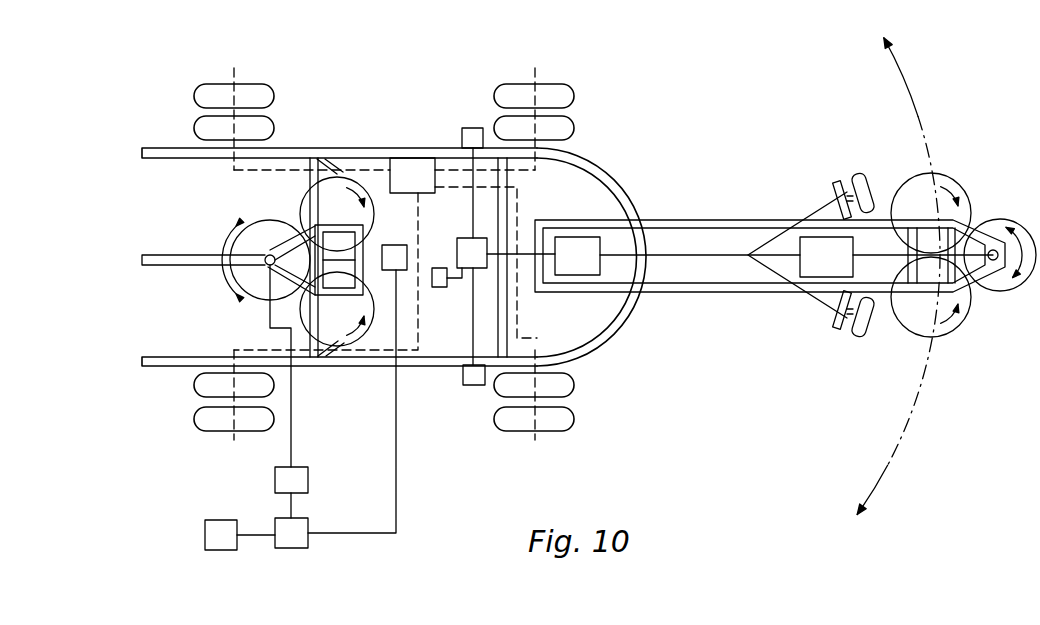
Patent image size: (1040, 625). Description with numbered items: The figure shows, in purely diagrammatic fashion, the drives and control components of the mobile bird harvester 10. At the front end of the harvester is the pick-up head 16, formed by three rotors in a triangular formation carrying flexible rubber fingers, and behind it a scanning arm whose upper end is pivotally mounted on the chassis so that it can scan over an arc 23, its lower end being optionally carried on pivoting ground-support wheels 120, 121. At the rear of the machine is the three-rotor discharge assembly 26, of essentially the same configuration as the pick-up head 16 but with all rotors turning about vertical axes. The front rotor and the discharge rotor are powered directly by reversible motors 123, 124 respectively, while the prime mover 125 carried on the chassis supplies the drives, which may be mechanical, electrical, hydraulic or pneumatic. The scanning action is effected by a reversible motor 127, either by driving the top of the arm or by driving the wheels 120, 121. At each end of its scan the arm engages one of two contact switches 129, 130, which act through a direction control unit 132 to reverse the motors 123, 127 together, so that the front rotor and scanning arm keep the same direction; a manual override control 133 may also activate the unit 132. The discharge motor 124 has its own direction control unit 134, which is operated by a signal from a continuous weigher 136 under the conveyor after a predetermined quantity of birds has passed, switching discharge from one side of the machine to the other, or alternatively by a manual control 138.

The mobile bird harvester 10 is at (398, 120).
The pick-up head 16 is at (996, 192).
The arc 23 is at (912, 88).
The 3-rotor discharge assembly 26 is at (259, 304).
The pivotting ground-support wheel 120 is at (863, 180).
The pivotting ground-support wheel 121 is at (863, 333).
The reversible motor 123 is at (835, 265).
The reversible motor 124 is at (302, 480).
The prime mover 125 is at (418, 168).
The reversible motor 127 is at (572, 245).
The contact switch 129 is at (474, 128).
The contact switch 130 is at (476, 386).
The direction control unit 132 is at (460, 250).
The manual (override) control 133 is at (442, 288).
The direction control unit 134 is at (302, 527).
The continuous weigher 136 is at (397, 246).
The manual control 138 is at (222, 520).